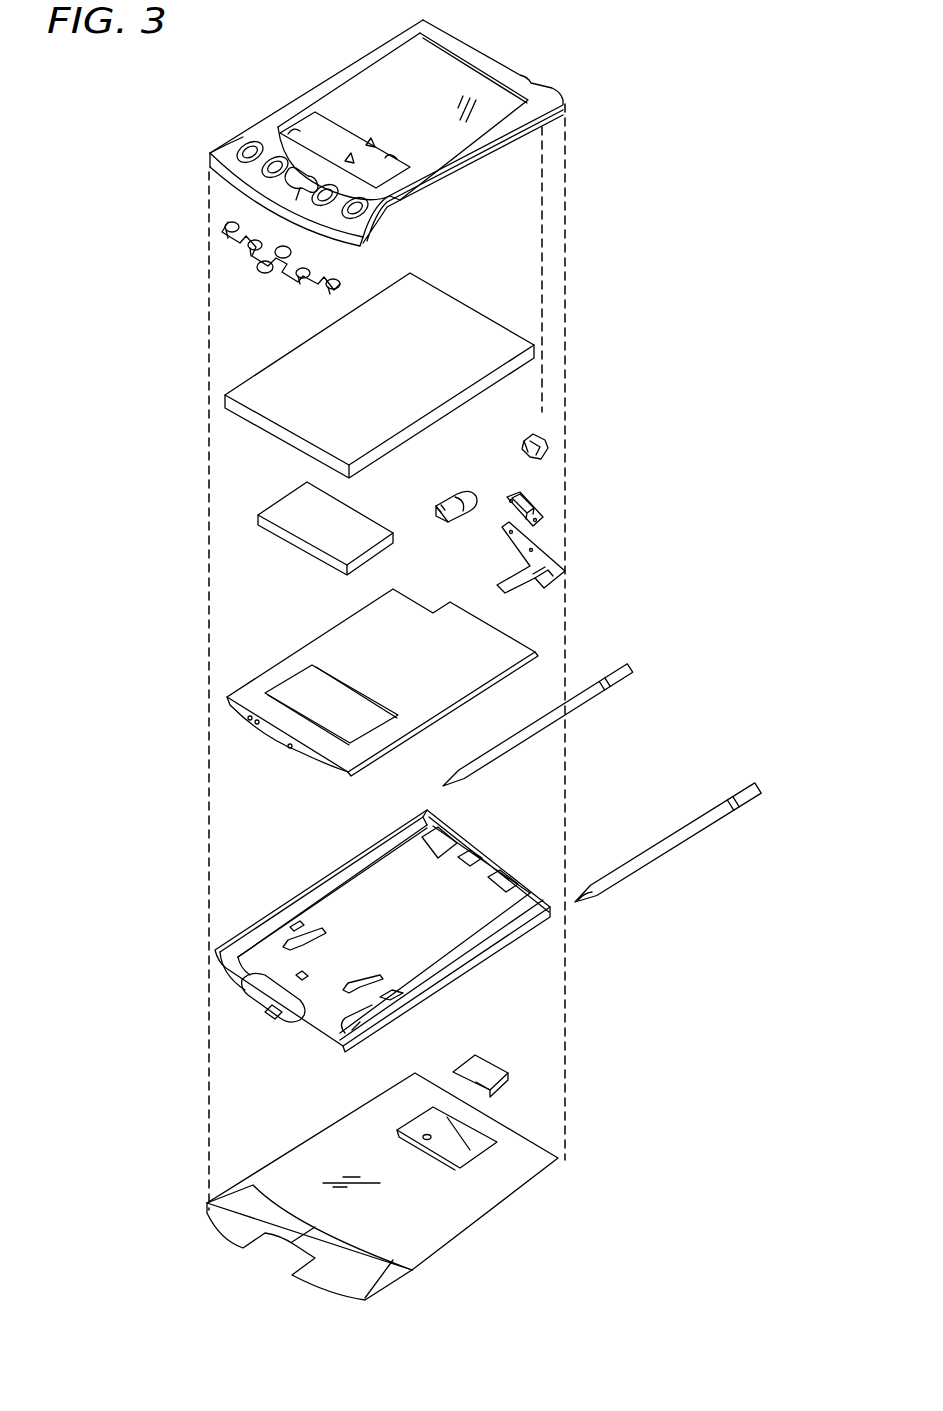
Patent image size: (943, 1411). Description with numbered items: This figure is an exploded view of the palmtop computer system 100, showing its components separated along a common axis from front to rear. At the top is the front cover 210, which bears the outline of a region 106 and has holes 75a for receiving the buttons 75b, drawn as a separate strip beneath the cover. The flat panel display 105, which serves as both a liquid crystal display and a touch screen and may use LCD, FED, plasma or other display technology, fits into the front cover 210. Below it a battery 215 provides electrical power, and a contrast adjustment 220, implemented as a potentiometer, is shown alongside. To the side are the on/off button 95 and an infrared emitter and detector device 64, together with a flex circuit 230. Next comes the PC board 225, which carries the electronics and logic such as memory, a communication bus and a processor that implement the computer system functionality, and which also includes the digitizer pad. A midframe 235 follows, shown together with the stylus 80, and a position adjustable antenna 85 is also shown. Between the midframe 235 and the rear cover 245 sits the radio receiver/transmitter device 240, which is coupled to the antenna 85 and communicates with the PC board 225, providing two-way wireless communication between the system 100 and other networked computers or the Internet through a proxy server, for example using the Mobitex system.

The palmtop computer system 100 is at (104, 84).
The front cover 210 is at (560, 102).
The region 106 is at (314, 130).
The holes 75a is at (247, 146).
The buttons 75b is at (228, 222).
The flat panel display 105 is at (228, 387).
The battery 215 is at (262, 503).
The contrast adjustment 220 is at (455, 488).
The on/off button 95 is at (549, 441).
The infrared emitter and detector device 64 is at (538, 508).
The flex circuit 230 is at (553, 556).
The PC board 225 is at (235, 690).
The position adjustable antenna 85 is at (633, 670).
The stylus 80 is at (756, 786).
The midframe 235 is at (518, 942).
The radio receiver/transmitter device 240 is at (492, 1068).
The rear cover 245 is at (515, 1189).